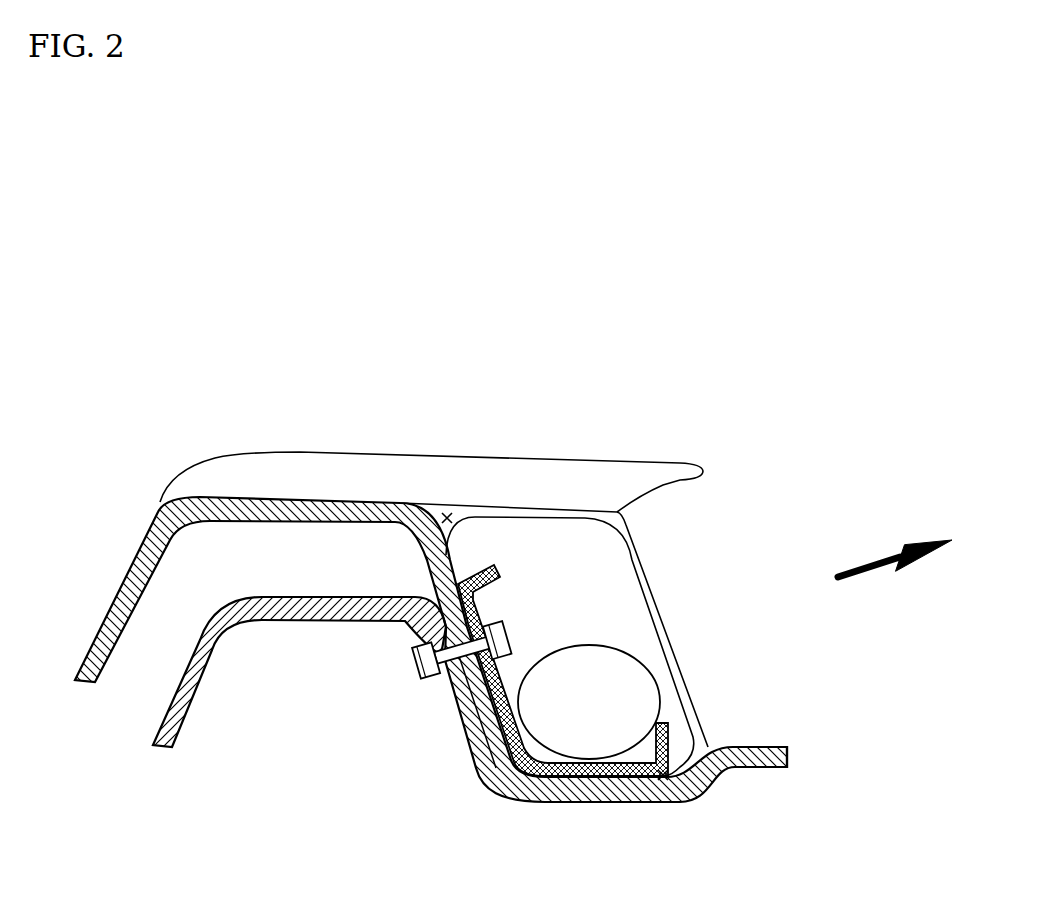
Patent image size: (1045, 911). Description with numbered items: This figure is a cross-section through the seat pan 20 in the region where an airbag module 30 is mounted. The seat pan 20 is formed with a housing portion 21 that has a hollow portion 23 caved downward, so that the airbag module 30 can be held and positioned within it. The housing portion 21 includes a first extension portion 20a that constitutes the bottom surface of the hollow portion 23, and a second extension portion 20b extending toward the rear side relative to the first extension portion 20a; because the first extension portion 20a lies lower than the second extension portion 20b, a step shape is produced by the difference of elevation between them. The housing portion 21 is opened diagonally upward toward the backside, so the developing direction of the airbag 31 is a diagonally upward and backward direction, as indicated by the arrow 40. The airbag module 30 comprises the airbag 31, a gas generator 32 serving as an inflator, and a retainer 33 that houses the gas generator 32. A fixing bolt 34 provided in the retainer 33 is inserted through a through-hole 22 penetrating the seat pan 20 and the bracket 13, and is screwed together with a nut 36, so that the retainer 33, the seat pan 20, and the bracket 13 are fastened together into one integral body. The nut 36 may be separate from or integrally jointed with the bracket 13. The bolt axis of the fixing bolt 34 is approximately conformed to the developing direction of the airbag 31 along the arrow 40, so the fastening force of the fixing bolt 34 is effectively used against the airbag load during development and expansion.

The bracket 13 is at (200, 702).
The seat pan 20 is at (131, 545).
The first extension portion 20a is at (582, 802).
The second extension portion 20b is at (760, 767).
The housing portion 21 is at (451, 506).
The through-hole 22 is at (450, 697).
The hollow portion 23 is at (666, 779).
The airbag module 30 is at (634, 559).
The airbag 31 is at (595, 602).
The gas generator 32 is at (603, 698).
The retainer 33 is at (637, 771).
The fixing bolt 34 is at (511, 622).
The nut 36 is at (423, 687).
The arrow 40 is at (895, 536).